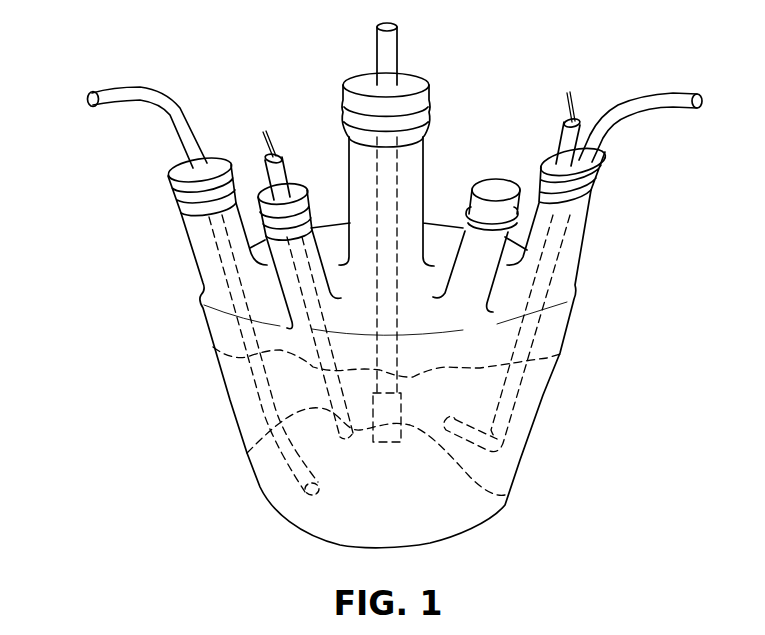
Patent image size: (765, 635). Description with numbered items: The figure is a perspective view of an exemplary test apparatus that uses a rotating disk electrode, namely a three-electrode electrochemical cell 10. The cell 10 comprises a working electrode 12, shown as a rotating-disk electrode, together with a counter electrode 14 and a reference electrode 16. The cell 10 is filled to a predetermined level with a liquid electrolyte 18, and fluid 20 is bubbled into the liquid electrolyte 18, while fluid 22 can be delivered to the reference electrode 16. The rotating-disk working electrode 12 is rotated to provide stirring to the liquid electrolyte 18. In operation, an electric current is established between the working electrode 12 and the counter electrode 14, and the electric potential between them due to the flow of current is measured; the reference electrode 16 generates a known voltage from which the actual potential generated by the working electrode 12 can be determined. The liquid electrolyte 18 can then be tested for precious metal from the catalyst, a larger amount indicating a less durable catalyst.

The three-electrode electrochemical cell 10 is at (92, 241).
The working electrode 12 is at (505, 495).
The counter electrode 14 is at (247, 453).
The reference electrode 16 is at (537, 432).
The liquid electrolyte 18 is at (533, 383).
The fluid 20 is at (113, 103).
The fluid 22 is at (673, 102).